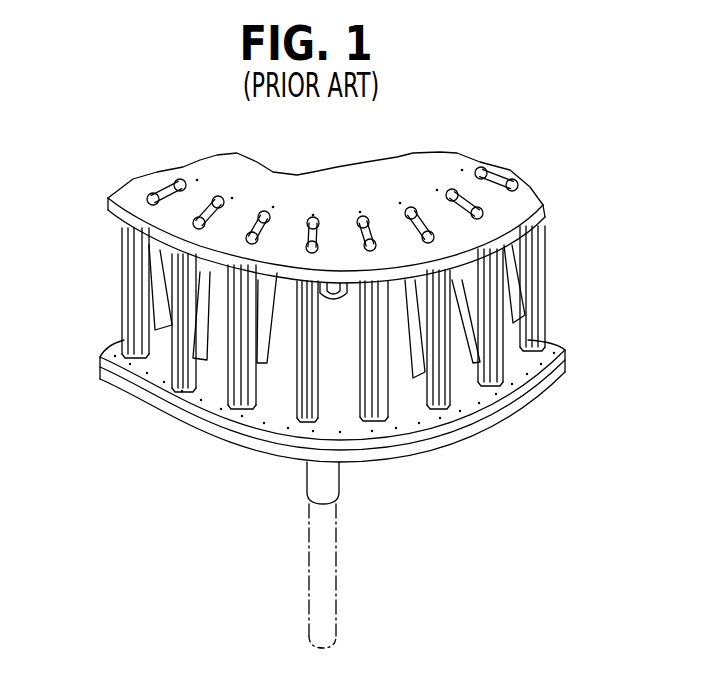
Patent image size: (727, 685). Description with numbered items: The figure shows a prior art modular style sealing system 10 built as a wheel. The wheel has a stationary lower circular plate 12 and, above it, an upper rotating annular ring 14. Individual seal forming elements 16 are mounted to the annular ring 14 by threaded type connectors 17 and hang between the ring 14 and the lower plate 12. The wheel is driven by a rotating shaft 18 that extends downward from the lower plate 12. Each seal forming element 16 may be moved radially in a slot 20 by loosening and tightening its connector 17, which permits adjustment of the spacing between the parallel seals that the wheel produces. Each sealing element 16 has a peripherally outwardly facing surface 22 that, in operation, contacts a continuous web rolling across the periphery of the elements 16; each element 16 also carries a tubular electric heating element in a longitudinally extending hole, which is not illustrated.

The modular style sealing system 10 is at (396, 148).
The stationary lower circular plate 12 is at (212, 400).
The upper rotating annular ring 14 is at (447, 164).
The seal forming elements 16 is at (143, 287).
The threaded type connectors 17 is at (151, 195).
The rotating shaft 18 is at (332, 488).
The slots 20 is at (214, 205).
The peripherally outwardly facing surface 22 is at (170, 383).